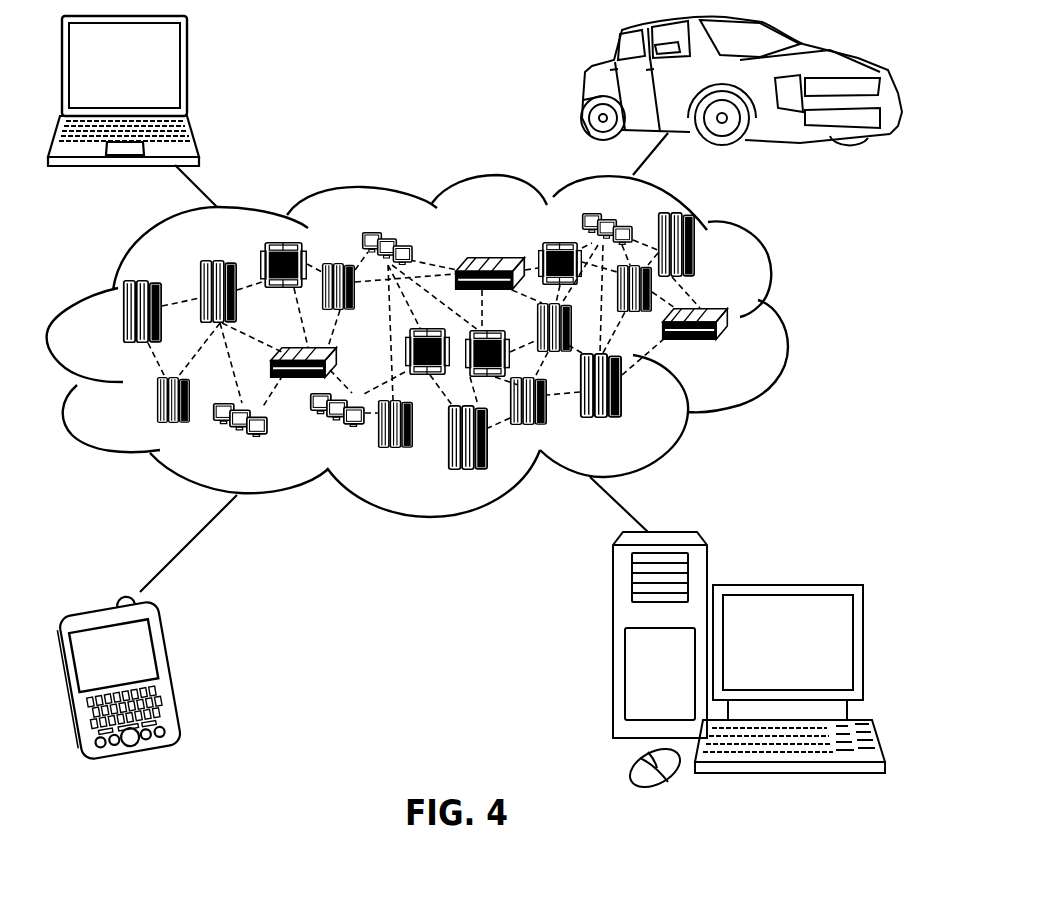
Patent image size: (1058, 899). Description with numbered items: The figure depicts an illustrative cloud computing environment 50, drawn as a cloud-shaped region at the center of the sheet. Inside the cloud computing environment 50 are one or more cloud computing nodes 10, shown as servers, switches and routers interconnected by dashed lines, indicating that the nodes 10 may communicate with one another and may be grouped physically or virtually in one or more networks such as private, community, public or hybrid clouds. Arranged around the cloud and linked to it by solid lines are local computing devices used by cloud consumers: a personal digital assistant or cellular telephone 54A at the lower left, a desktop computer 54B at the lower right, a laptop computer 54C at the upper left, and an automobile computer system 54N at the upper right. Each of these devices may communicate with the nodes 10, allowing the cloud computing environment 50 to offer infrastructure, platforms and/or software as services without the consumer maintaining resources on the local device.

The cloud computing nodes 10 is at (732, 346).
The cloud computing environment 50 is at (783, 322).
The personal digital assistant (PDA) or cellular telephone 54A is at (178, 668).
The desktop computer 54B is at (783, 585).
The laptop computer 54C is at (188, 70).
The automobile computer system 54N is at (584, 86).